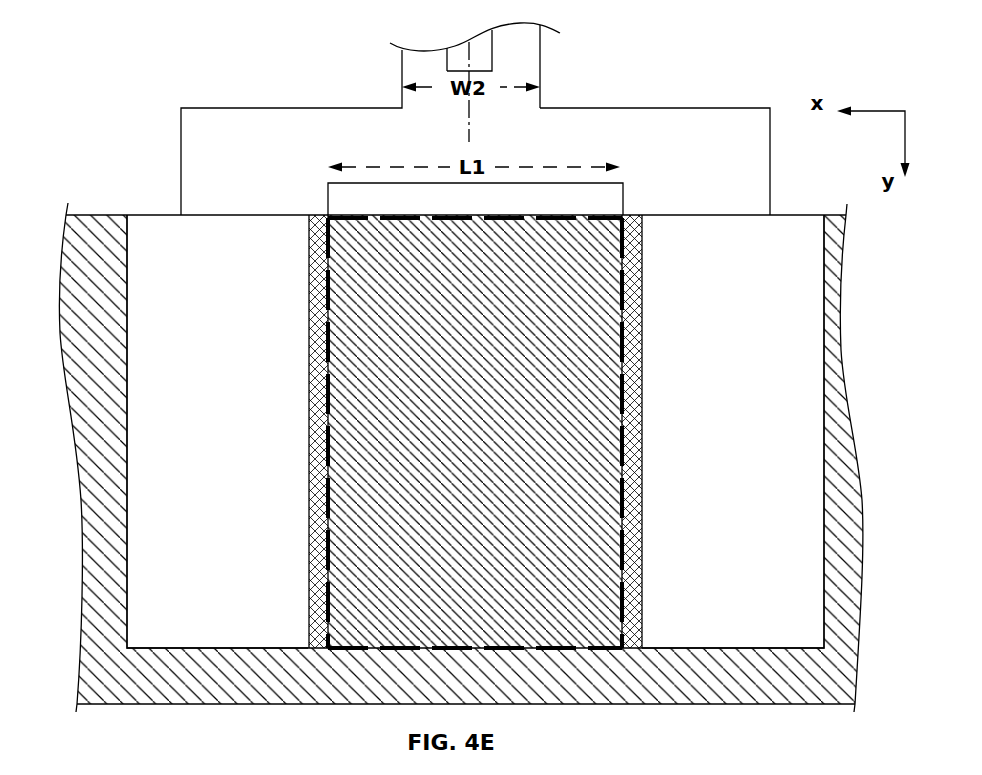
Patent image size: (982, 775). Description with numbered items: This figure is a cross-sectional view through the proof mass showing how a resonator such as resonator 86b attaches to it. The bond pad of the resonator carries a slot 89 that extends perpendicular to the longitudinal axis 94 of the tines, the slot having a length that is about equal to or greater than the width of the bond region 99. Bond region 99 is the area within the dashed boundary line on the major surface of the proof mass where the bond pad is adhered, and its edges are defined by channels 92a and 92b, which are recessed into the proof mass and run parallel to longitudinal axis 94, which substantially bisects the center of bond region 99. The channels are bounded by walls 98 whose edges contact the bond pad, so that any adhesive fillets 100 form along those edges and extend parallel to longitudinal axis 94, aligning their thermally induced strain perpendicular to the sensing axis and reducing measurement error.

The second resonator 86b is at (212, 97).
The slot 89 is at (463, 211).
The channel 92a is at (182, 239).
The channel 92b is at (752, 255).
The longitudinal axis 94 is at (469, 122).
The walls 98 is at (141, 318).
The bond region 99 is at (625, 547).
The adhesive fillets 100 is at (316, 450).